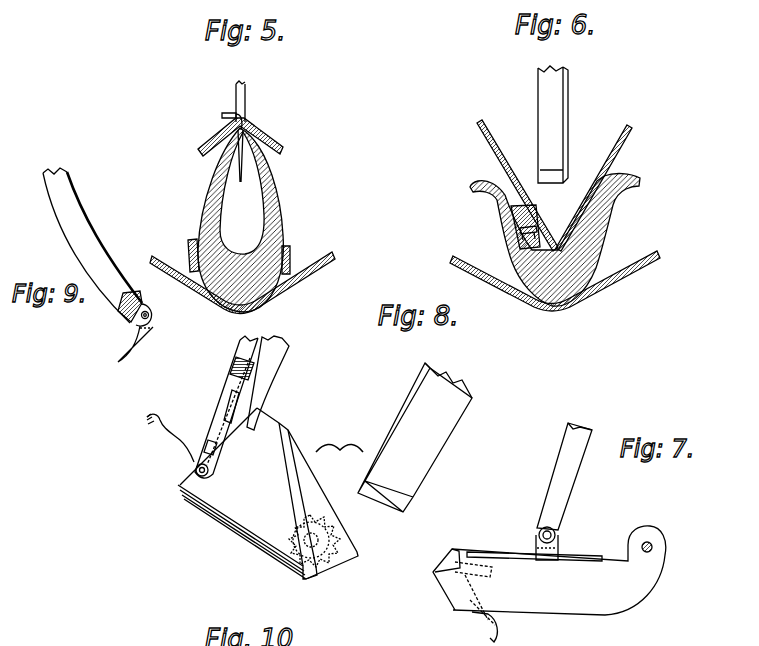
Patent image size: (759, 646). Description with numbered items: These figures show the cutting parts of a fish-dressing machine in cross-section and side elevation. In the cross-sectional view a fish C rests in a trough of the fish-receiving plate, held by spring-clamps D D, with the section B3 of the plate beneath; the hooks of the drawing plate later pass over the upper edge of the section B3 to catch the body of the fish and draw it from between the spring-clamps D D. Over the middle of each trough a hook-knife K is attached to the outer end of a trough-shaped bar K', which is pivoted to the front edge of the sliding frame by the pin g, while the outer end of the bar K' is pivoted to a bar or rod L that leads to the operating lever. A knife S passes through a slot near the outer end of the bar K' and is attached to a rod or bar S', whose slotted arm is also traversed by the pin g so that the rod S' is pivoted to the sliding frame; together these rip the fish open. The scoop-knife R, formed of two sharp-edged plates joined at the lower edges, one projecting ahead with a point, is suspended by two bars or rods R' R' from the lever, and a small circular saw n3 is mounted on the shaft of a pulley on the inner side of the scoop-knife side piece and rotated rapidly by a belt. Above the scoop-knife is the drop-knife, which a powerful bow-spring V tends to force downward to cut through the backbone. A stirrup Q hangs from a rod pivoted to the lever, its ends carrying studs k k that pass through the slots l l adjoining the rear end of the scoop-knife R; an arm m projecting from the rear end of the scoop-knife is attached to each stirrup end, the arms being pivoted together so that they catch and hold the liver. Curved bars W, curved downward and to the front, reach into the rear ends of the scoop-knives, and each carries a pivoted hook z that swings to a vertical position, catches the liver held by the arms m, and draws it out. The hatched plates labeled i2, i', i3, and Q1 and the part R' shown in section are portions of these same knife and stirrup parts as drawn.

In FIG. 5, the fish C is at (240, 220).
In FIG. 6, the fish C is at (555, 240).
In FIG. 5, the knife S is at (233, 156).
In FIG. 7, the knife S is at (463, 586).
In FIG. 5, the rod or bar S' is at (219, 115).
In FIG. 7, the rod or bar S' is at (534, 545).
In FIG. 5, the trough-shaped bar K' is at (241, 158).
In FIG. 7, the trough-shaped bar K' is at (559, 570).
In FIG. 5, the spring-clamps D is at (186, 246).
In FIG. 5, the section of fish-receiving plate B3 is at (242, 283).
In FIG. 6, the section of fish-receiving plate B3 is at (555, 285).
In FIG. 6, the bow-spring V is at (553, 124).
In FIG. 8, the bow-spring V is at (415, 437).
In FIG. 6, the slanted bar i2 is at (517, 185).
In FIG. 8, the slanted bar i2 is at (299, 495).
In FIG. 6, the slanted bar / plate i' is at (594, 188).
In FIG. 8, the slanted bar / plate i' is at (268, 493).
In FIG. 6, the toothed wheel / inner piece i3 is at (523, 222).
In FIG. 8, the toothed wheel / inner piece i3 is at (314, 541).
In FIG. 6, the circular saw n3 is at (532, 221).
In FIG. 6, the scoop-knife R is at (563, 215).
In FIG. 8, the bars or rods R' is at (274, 383).
In FIG. 9, the curved bars W is at (97, 247).
In FIG. 9, the hook z is at (140, 343).
In FIG. 8, the stirrup Q is at (226, 384).
In FIG. 8, the rod ratchet portion Q1 is at (239, 352).
In FIG. 8, the slots l is at (206, 441).
In FIG. 8, the studs k is at (195, 472).
In FIG. 8, the arm m is at (178, 452).
In FIG. 7, the bar or rod L is at (564, 491).
In FIG. 7, the hook-knife K is at (481, 627).
In FIG. 7, the pin g is at (652, 543).